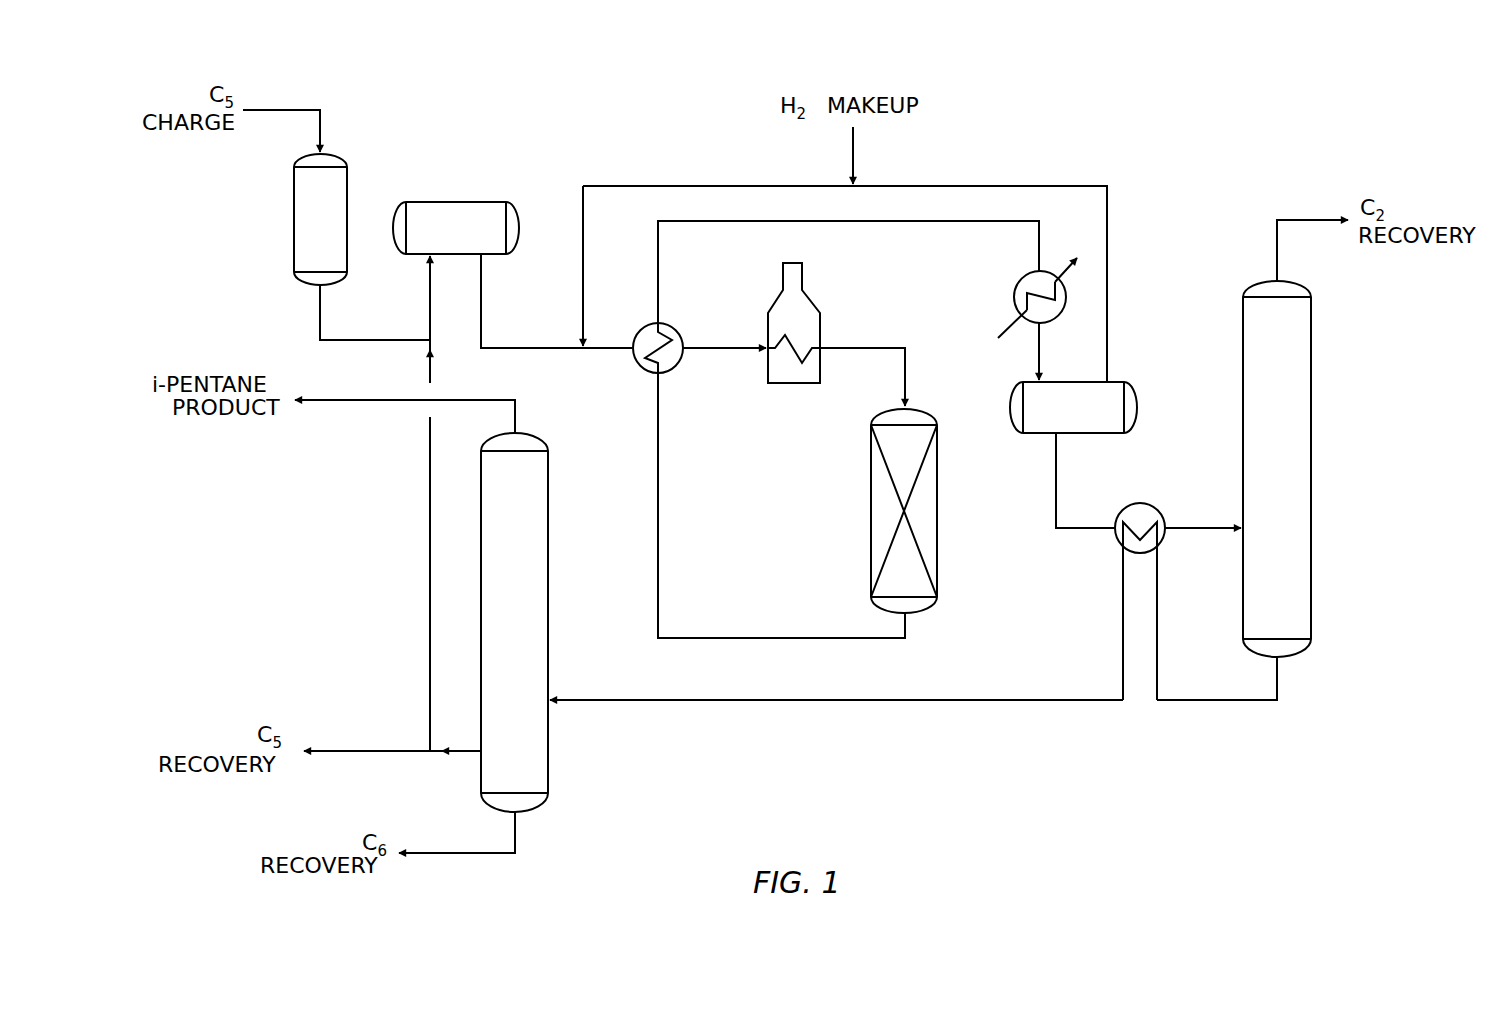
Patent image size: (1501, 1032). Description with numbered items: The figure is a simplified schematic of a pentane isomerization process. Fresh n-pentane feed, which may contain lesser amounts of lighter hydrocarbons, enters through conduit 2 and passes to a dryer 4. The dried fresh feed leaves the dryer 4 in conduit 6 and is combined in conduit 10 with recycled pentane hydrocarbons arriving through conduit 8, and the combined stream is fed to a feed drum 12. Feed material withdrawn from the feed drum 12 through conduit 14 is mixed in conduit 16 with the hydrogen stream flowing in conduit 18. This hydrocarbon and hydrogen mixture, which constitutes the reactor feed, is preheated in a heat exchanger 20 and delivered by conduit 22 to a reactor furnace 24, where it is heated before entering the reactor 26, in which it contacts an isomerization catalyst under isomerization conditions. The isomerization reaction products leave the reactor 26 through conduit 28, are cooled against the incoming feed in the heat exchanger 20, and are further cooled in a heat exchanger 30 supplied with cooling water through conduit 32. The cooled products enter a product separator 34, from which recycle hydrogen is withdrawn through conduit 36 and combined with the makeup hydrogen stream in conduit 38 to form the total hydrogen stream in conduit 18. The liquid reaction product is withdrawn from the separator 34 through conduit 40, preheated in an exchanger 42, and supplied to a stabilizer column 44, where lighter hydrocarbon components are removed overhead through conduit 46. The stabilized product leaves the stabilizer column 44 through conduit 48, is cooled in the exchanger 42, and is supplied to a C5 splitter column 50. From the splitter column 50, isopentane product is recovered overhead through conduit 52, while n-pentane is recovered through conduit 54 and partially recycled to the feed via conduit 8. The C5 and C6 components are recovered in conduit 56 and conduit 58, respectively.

The conduit 2 is at (295, 110).
The dryer 4 is at (294, 212).
The conduit 6 is at (320, 312).
The conduit 8 is at (430, 503).
The conduit 10 is at (430, 317).
The feed drum 12 is at (440, 202).
The conduit 14 is at (481, 313).
The conduit 16 is at (607, 350).
The conduit 18 is at (635, 186).
The heat exchanger 20 is at (673, 326).
The conduit 22 is at (728, 352).
The reactor furnace 24 is at (806, 300).
The reactor 26 is at (937, 532).
The conduit 28 is at (768, 638).
The heat exchanger 30 is at (1017, 284).
The conduit 32 is at (1003, 332).
The product separator 34 is at (1137, 397).
The conduit 36 is at (1107, 222).
The conduit 38 is at (853, 148).
The conduit 40 is at (1082, 530).
The exchanger 42 is at (1153, 506).
The stabilizer column 44 is at (1311, 452).
The conduit 46 is at (1297, 220).
The conduit 48 is at (1217, 702).
The C5 splitter column 50 is at (548, 595).
The conduit 52 is at (352, 402).
The conduit 54 is at (467, 753).
The conduit 56 is at (363, 751).
The conduit 58 is at (515, 837).